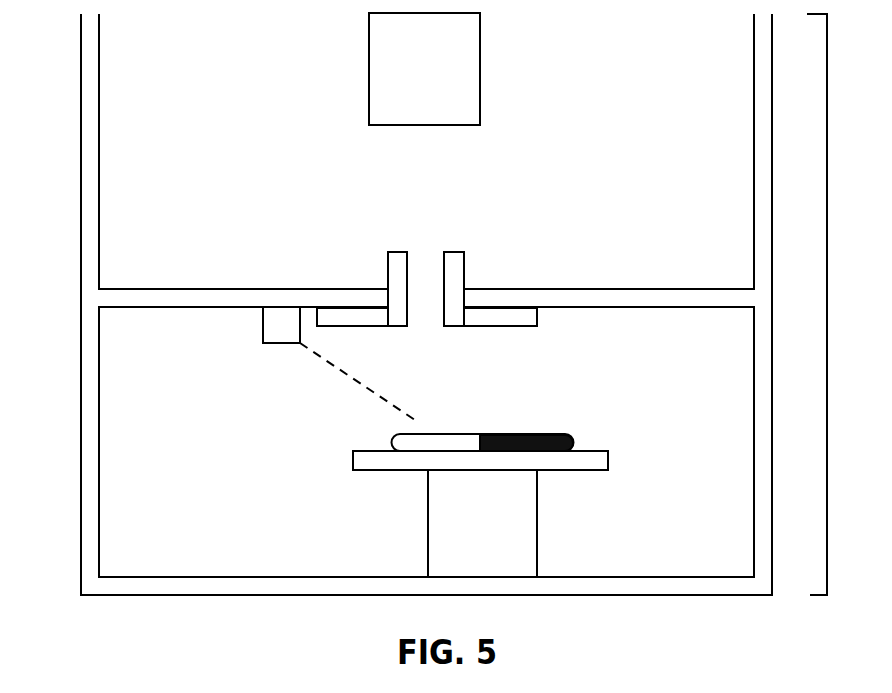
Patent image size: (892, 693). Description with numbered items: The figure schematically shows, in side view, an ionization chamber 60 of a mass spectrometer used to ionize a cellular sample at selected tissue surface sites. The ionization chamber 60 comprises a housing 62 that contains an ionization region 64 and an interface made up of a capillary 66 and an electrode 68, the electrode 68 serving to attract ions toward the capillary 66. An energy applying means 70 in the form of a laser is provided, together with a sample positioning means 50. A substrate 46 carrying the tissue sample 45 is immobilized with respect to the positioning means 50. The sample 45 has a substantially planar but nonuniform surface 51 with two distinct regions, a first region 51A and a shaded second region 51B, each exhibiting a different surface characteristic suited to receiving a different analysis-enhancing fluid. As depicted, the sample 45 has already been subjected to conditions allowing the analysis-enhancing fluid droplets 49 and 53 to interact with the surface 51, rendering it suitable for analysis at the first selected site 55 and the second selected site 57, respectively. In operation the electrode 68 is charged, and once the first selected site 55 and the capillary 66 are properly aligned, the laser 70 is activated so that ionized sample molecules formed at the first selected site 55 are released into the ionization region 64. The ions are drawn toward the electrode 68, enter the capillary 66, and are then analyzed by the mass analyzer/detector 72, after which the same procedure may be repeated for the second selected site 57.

The ionization chamber 60 is at (827, 307).
The housing 62 is at (83, 133).
The ionization region 64 is at (464, 377).
The capillary 66 is at (425, 253).
The electrode 68 is at (347, 327).
The energy applying means 70 is at (263, 328).
The mass analyzer/detector 72 is at (480, 40).
The substrate 46 is at (608, 458).
The analysis-enhancing fluid droplet 49 is at (445, 433).
The sample positioning means 50 is at (537, 530).
The surface 51 is at (482, 435).
The first region 51A is at (410, 434).
The second region 51B is at (565, 435).
The analysis-enhancing fluid droplet 53 is at (532, 434).
The cellular sample 45 is at (575, 442).
The first selected site 55 is at (425, 450).
The second selected site 57 is at (550, 453).